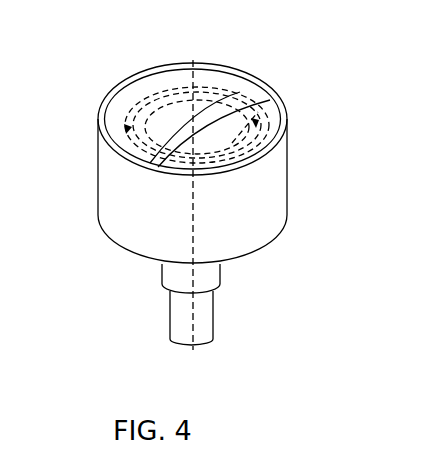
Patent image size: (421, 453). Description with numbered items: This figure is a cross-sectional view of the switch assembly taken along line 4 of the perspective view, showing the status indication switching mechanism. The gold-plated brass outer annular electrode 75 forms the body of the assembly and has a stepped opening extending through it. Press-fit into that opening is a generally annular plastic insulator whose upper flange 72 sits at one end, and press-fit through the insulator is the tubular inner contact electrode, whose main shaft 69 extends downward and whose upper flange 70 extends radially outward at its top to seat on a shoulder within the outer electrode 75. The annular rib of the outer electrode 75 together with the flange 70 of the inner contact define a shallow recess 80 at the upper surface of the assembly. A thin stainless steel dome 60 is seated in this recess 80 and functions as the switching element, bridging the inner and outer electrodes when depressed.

The section line 4— 4 is at (193, 60).
The stainless steel dome 60 is at (239, 94).
The main shaft 69 is at (203, 282).
The upper flange 70 is at (270, 101).
The upper flange 72 is at (250, 150).
The outer annular electrode 75 is at (117, 203).
The recess 80 is at (263, 120).